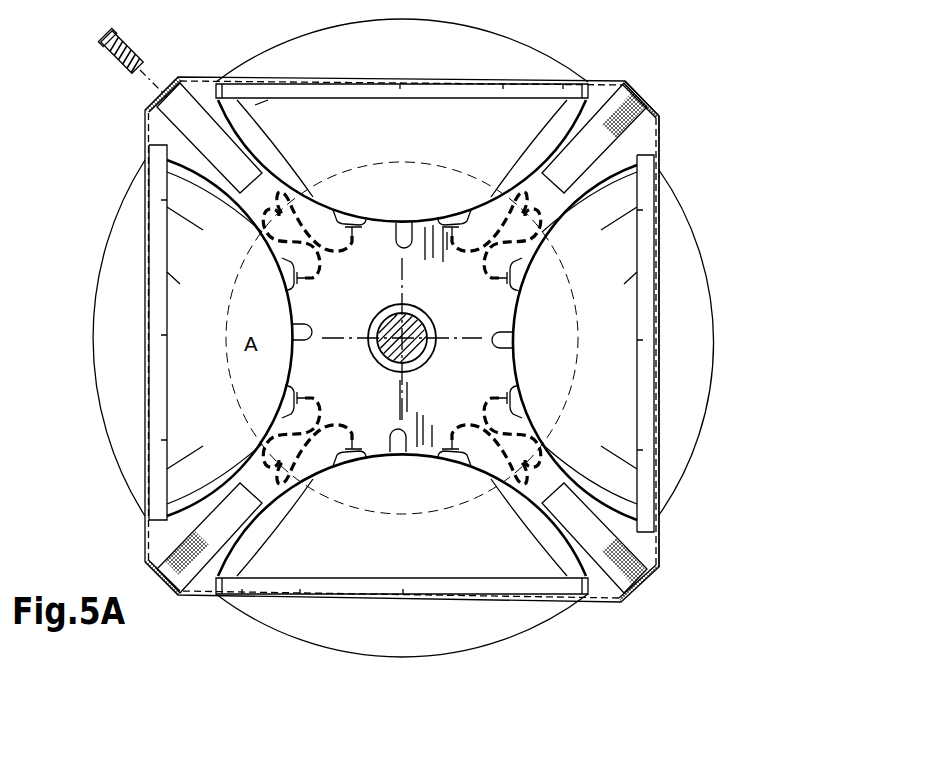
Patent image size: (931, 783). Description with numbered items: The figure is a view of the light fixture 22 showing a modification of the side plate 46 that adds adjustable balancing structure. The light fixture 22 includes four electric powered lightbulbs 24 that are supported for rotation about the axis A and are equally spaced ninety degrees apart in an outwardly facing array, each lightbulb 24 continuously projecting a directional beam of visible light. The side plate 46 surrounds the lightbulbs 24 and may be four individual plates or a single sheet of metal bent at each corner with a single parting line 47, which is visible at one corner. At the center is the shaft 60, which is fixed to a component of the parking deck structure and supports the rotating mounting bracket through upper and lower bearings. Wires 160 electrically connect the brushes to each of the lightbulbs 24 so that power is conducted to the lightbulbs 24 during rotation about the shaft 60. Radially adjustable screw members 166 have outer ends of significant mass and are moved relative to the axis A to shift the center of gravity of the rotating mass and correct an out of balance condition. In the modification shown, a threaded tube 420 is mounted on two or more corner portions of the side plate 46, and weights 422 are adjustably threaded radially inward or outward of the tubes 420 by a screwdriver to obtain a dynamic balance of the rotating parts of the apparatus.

The light fixture 22 is at (666, 94).
The lightbulb 24 is at (510, 50).
The side plate 46 is at (659, 137).
The parting line 47 is at (625, 83).
The shaft 60 is at (263, 349).
The wires 160 is at (262, 476).
The screw member 166 is at (547, 247).
The threaded tube 420 is at (187, 115).
The weight 422 is at (140, 51).